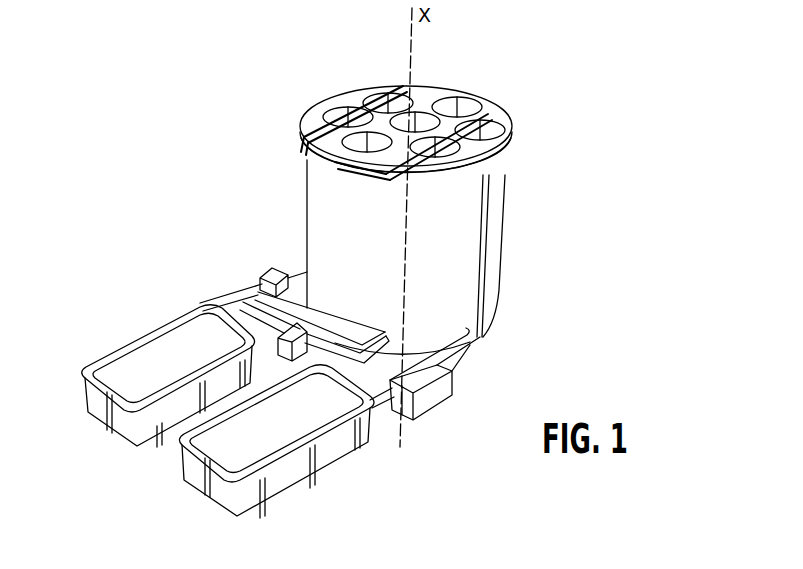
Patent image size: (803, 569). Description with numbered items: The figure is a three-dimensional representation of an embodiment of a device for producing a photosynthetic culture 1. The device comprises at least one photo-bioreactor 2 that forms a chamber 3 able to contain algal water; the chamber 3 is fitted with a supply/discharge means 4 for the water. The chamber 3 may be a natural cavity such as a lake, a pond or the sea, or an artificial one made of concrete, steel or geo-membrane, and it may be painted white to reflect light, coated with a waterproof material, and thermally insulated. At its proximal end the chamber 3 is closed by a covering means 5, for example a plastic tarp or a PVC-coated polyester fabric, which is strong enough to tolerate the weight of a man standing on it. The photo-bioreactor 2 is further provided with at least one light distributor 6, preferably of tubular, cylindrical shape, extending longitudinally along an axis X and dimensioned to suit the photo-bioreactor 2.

The device for producing a photosynthetic culture 1 is at (616, 162).
The photo-bioreactor 2 is at (506, 232).
The chamber 3 is at (488, 283).
The supply/discharge means 4 is at (345, 178).
The covering means 5 is at (507, 133).
The light distributor 6 is at (484, 128).